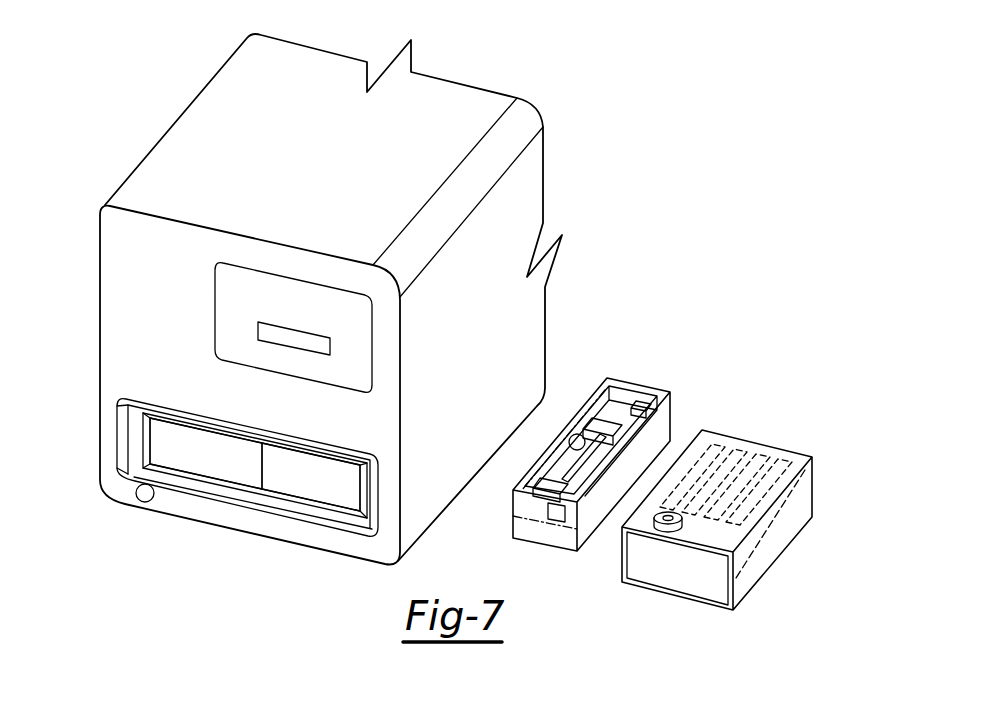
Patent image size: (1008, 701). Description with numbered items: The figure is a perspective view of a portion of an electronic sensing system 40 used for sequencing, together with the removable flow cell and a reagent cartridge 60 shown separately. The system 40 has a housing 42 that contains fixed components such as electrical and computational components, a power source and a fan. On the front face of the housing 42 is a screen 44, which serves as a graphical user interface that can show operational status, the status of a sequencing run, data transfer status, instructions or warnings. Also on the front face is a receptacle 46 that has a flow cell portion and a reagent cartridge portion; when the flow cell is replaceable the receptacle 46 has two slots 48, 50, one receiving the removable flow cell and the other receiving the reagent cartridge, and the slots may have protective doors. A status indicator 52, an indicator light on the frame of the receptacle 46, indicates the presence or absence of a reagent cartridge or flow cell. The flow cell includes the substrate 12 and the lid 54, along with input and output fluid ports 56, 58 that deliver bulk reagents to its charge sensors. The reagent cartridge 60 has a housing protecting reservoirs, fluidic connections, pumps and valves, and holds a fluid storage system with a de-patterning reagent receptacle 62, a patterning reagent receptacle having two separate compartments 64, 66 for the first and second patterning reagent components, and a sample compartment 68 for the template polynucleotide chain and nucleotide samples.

The sensing system 40 is at (130, 133).
The housing 42 is at (118, 281).
The screen 44 is at (257, 285).
The receptacle 46 is at (167, 420).
The slot 48 is at (180, 456).
The slot 50 is at (313, 488).
The status indicator 52 is at (127, 440).
The lid 54 is at (617, 385).
The input fluid port 56 is at (643, 408).
The output fluid port 58 is at (553, 511).
The substrate 12 is at (523, 522).
The reagent cartridge 60 is at (753, 455).
The de-patterning reagent receptacle 62 is at (720, 470).
The first compartment 64 is at (770, 527).
The second compartment 66 is at (770, 497).
The sample compartment 68 is at (753, 550).